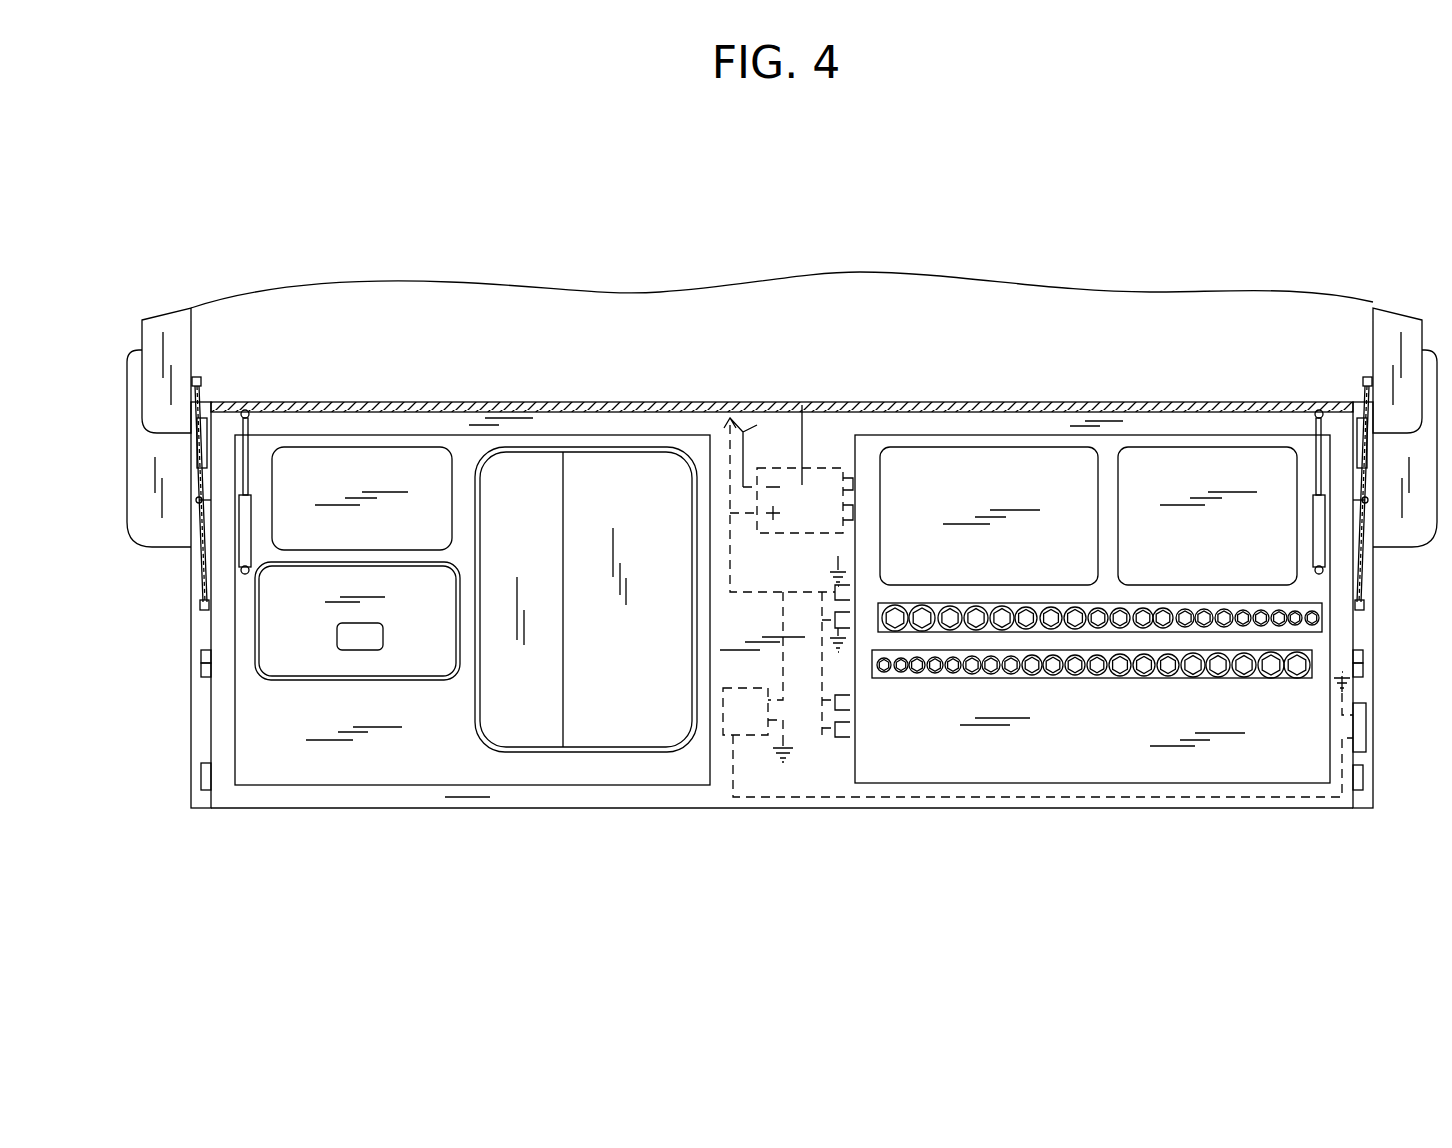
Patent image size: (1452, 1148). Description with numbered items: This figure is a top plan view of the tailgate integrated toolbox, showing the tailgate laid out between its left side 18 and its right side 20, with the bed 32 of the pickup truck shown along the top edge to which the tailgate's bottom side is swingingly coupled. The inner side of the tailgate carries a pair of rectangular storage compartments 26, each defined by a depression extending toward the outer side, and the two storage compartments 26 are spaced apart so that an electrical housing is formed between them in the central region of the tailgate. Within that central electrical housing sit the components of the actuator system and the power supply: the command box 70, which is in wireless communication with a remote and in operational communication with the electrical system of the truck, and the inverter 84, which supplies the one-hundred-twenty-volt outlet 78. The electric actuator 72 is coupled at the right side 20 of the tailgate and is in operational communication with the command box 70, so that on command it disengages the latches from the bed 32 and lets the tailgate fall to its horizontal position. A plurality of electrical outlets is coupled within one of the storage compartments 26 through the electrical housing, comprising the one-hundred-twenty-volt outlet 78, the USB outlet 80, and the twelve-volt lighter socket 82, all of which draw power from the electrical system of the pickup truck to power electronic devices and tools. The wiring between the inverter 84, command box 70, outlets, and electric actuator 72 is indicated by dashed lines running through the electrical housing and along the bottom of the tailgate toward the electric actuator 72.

The left side 18 is at (210, 737).
The right side 20 is at (1353, 627).
The storage compartment 26 is at (650, 770).
The bed 32 is at (1210, 330).
The command box 70 is at (733, 718).
The electric actuator 72 is at (1366, 728).
The 120V outlet 78 is at (848, 515).
The USB outlet 80 is at (851, 622).
The 12V lighter socket 82 is at (851, 698).
The inverter 84 is at (802, 420).